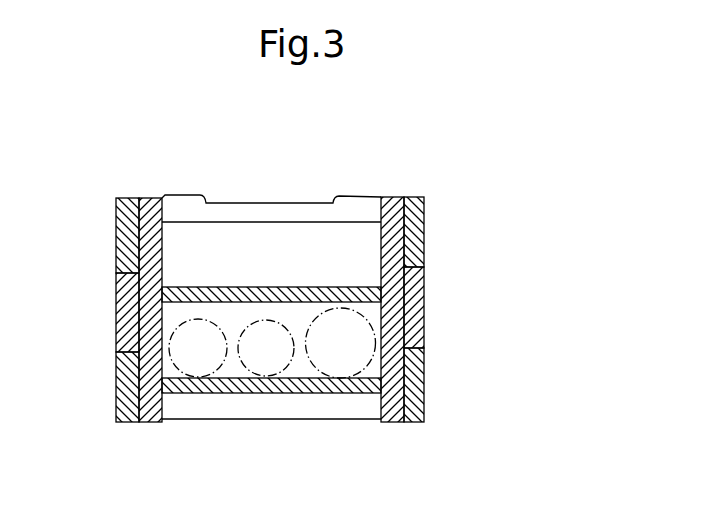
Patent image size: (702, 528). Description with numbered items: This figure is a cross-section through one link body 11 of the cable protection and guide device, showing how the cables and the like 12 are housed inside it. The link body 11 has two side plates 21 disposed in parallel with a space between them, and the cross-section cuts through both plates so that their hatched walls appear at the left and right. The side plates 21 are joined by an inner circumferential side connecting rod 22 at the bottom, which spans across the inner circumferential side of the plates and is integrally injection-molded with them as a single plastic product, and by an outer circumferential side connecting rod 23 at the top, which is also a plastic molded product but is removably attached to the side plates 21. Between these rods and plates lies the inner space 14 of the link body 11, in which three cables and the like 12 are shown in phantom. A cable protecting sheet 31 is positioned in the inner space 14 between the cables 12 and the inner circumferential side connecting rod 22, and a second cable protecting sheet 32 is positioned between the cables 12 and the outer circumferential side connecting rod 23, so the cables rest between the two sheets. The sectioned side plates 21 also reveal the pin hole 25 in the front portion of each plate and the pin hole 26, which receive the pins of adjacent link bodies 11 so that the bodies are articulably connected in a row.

The link body 11 is at (192, 195).
The cables and the like 12 is at (251, 368).
The inner space 14 is at (281, 252).
The side plate 21 is at (150, 198).
The inner circumferential side connecting rod 22 is at (262, 407).
The outer circumferential side connecting rod 23 is at (247, 203).
The pin hole 25 is at (118, 280).
The pin hole 26 is at (118, 322).
The cable protecting sheet 31 is at (317, 393).
The cable protecting sheet 32 is at (322, 287).